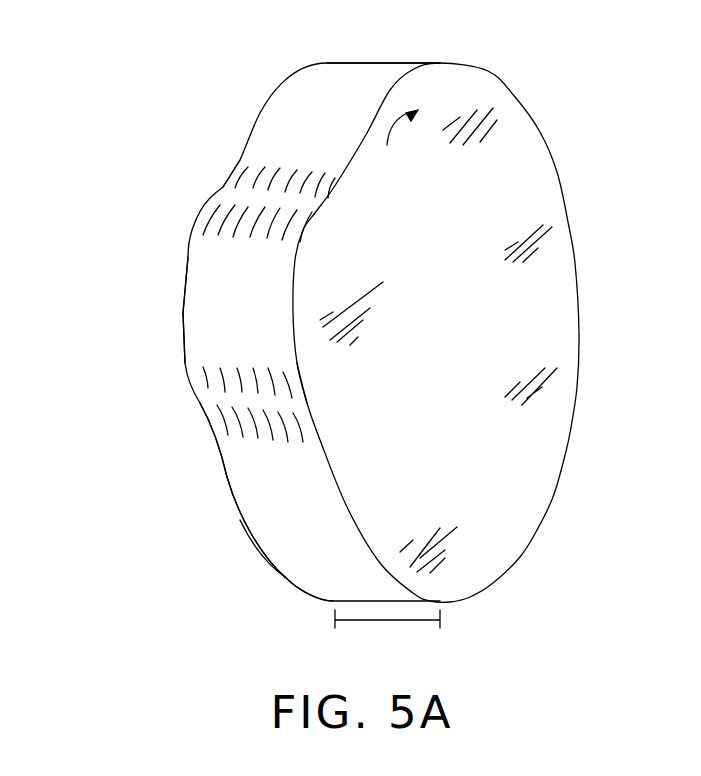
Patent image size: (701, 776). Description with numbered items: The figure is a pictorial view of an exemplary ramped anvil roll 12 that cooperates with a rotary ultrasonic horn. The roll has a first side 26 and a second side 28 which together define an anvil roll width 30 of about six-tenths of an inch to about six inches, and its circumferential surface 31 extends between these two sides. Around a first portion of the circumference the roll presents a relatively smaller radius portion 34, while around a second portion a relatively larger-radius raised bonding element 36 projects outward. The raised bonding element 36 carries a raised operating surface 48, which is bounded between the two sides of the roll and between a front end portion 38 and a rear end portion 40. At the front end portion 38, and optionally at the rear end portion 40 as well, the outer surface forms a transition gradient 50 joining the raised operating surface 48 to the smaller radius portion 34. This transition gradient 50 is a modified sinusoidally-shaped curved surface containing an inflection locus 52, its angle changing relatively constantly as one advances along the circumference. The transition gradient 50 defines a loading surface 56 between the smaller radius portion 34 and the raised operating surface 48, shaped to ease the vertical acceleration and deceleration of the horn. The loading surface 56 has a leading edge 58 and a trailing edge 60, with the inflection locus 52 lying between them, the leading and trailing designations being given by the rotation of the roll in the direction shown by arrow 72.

The ramped anvil roll 12 is at (120, 235).
The first side 26 is at (277, 567).
The second side 28 is at (350, 508).
The anvil roll width 30 is at (383, 622).
The surface 31 is at (355, 84).
The relatively smaller radius portion 34 is at (252, 532).
The raised bonding element 36 is at (183, 323).
The front end portion 38 is at (295, 167).
The rear end portion 40 is at (263, 443).
The raised operating surface 48 is at (220, 290).
The transition gradient 50 is at (213, 195).
The inflection locus 52 is at (297, 403).
The loading surface 56 is at (210, 400).
The leading edge 58 is at (247, 173).
The trailing edge 60 is at (290, 225).
The arrow 72 is at (368, 187).